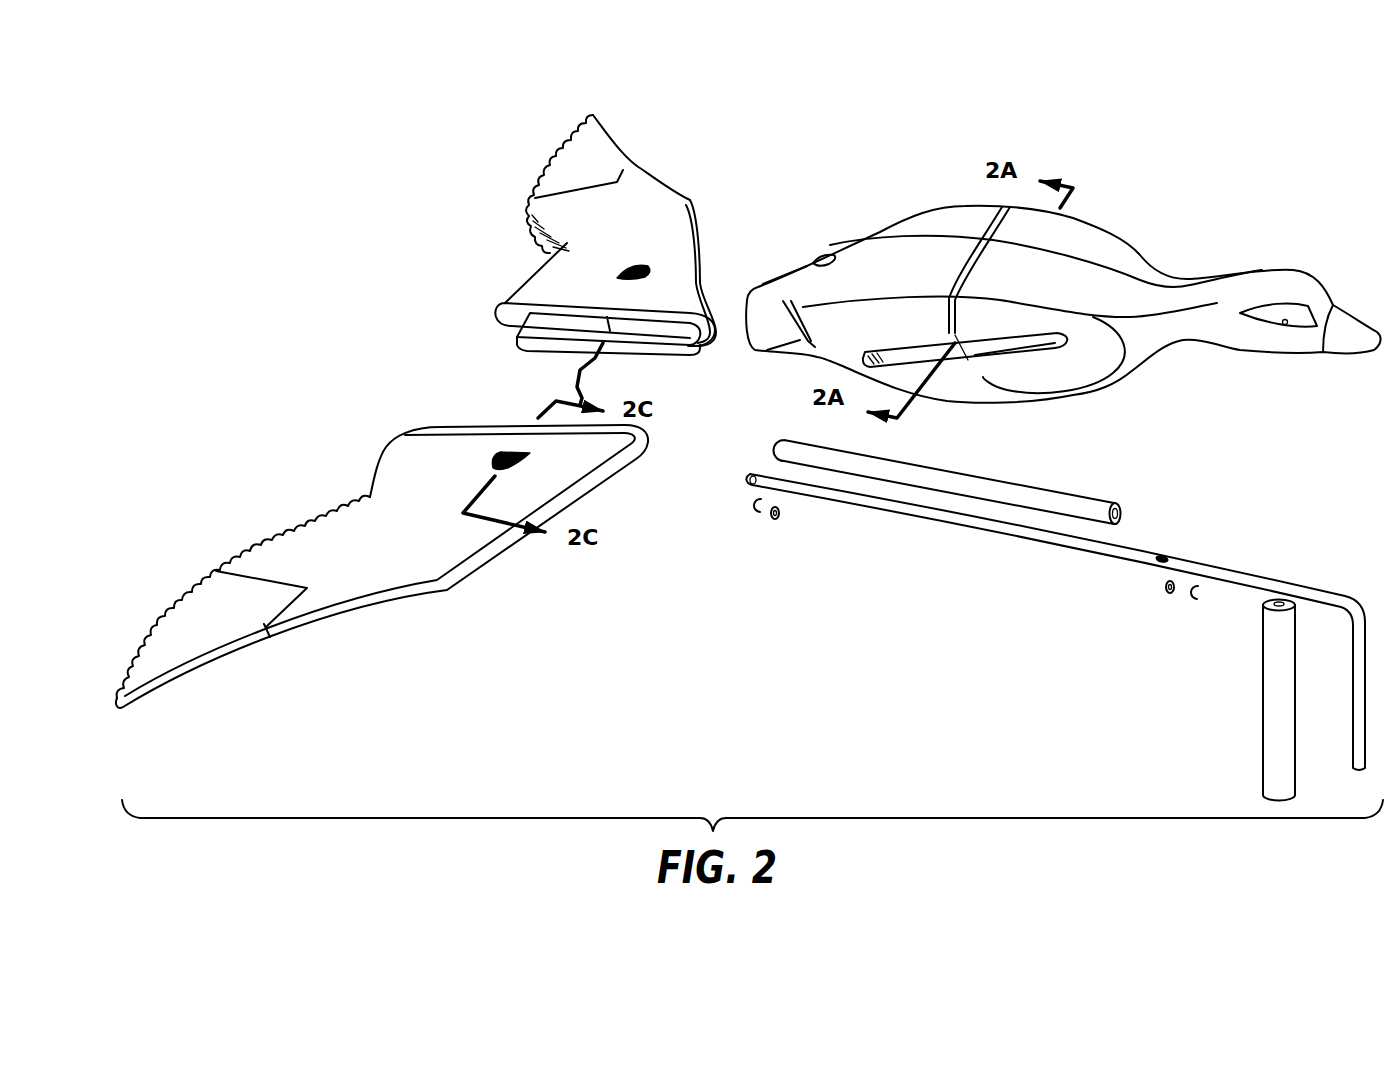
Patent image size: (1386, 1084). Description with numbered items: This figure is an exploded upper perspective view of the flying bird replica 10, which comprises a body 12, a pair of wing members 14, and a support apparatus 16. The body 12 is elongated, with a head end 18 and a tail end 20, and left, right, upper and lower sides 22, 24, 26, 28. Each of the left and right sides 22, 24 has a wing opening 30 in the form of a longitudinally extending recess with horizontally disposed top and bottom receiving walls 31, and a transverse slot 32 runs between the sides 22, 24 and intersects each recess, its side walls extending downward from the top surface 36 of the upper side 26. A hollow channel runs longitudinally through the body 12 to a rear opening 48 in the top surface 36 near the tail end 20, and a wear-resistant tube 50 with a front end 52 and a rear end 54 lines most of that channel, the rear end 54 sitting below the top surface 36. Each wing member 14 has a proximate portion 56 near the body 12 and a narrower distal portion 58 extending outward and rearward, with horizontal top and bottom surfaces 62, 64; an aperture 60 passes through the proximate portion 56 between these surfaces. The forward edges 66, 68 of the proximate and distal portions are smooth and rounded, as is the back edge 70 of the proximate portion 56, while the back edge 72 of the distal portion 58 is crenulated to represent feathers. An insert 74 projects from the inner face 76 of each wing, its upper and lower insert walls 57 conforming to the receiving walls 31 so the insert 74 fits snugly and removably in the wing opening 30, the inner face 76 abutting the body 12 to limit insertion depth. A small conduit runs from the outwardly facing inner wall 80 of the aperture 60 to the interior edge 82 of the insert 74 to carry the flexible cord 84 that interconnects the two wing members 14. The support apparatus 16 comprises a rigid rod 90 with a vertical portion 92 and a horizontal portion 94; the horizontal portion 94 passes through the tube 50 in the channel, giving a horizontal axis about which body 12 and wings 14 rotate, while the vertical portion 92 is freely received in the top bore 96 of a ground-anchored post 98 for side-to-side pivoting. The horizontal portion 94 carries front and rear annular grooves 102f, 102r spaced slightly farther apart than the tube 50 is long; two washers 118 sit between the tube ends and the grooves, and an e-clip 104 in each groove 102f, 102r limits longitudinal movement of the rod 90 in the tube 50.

The flying bird replica 10 is at (913, 140).
The body 12 is at (1035, 288).
The wing member 14 is at (467, 180).
The support apparatus 16 is at (1313, 567).
The head end 18 is at (1307, 253).
The tail end 20 is at (753, 363).
The left side 22 is at (1137, 242).
The right side 24 is at (1107, 353).
The upper side 26 is at (1093, 213).
The lower side 28 is at (947, 403).
The wing opening 30 is at (990, 340).
The receiving wall 31 is at (1047, 347).
The transverse slot 32 is at (1000, 213).
The top surface 36 is at (920, 223).
The rear opening 48 is at (830, 257).
The wear-resistant tube 50 is at (1033, 490).
The front end 52 is at (1128, 522).
The rear end 54 is at (773, 442).
The proximate portion 56 is at (560, 293).
The insert wall 57 is at (627, 323).
The distal portion 58 is at (588, 218).
The aperture 60 is at (643, 263).
The top surface 62 is at (537, 287).
The bottom surface 64 is at (508, 333).
The forward edge 66 is at (713, 293).
The forward edge 68 is at (660, 182).
The back edge 70 is at (507, 303).
The back edge 72 is at (547, 167).
The insert 74 is at (533, 353).
The inner face 76 is at (503, 323).
The inner wall 80 is at (498, 451).
The interior edge 82 is at (680, 348).
The flexible cord 84 is at (577, 377).
The rod 90 is at (973, 530).
The vertical portion 92 is at (1353, 737).
The horizontal portion 94 is at (1067, 547).
The top bore 96 is at (1263, 598).
The post 98 is at (1263, 737).
The rear groove 102r is at (753, 483).
The front groove 102f is at (1159, 557).
The e-clip 104 is at (750, 517).
The washer 118 is at (777, 527).